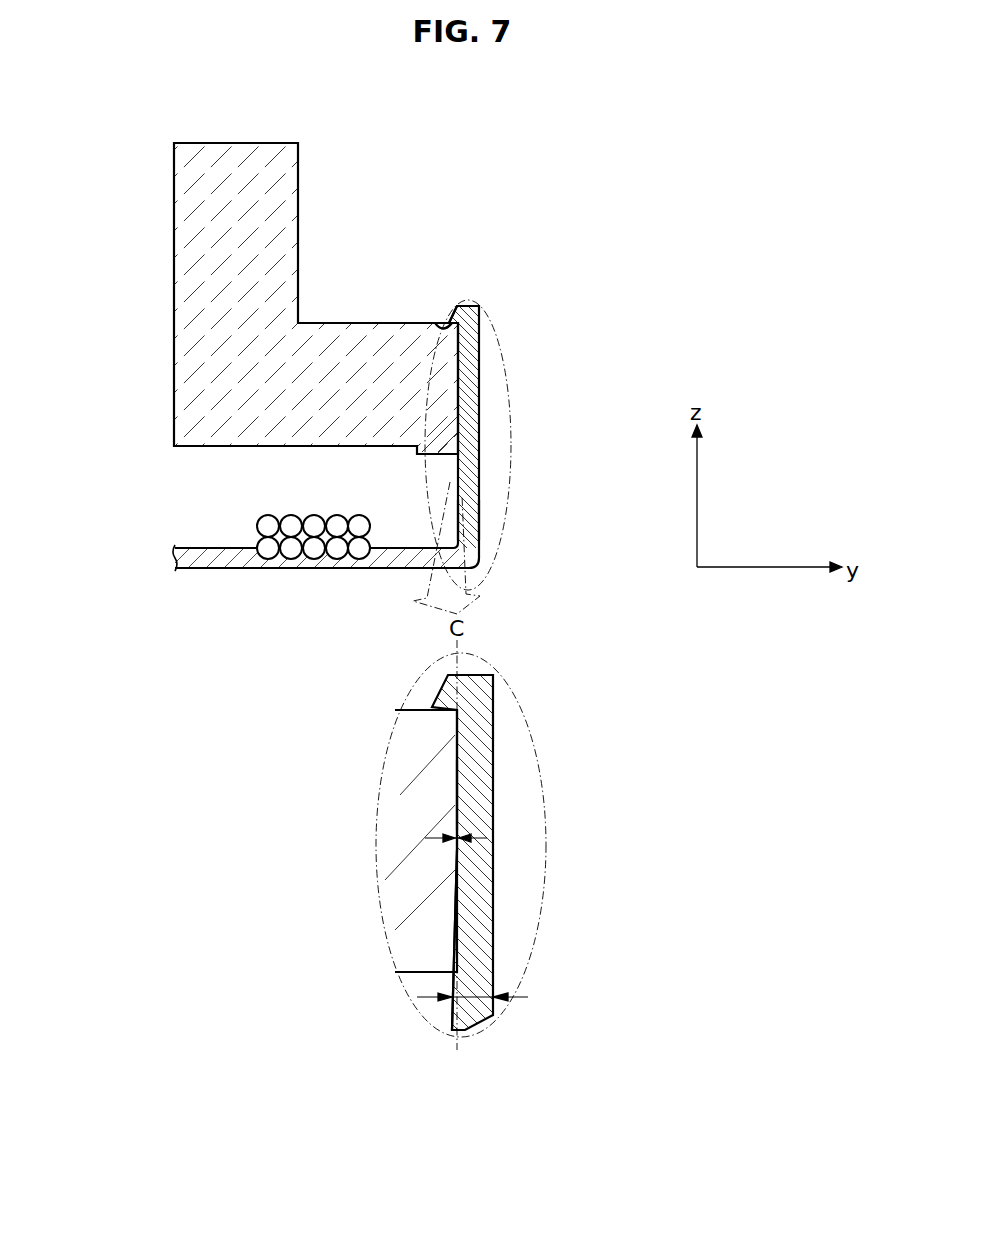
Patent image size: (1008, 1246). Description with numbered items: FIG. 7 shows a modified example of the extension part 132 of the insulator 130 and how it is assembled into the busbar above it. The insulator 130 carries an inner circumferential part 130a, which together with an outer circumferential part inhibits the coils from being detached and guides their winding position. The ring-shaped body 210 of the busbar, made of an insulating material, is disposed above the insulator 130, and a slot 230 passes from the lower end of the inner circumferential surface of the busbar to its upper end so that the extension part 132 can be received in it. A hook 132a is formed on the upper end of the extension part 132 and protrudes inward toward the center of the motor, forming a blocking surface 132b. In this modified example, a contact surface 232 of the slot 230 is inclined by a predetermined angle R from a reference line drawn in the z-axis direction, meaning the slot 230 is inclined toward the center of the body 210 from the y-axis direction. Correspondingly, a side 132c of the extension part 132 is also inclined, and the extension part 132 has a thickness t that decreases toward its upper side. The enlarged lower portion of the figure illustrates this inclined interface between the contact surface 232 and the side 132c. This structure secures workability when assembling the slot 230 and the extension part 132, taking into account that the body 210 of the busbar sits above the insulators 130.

The body 210 is at (178, 236).
The slot 230 is at (458, 405).
The contact surface 232 is at (457, 787).
The insulator 130 is at (299, 570).
The inner circumferential part 130a is at (480, 522).
The extension part 132 is at (480, 425).
The hook 132a is at (455, 306).
The blocking surface 132b is at (440, 330).
The side 132c is at (457, 817).
The predetermined angle R is at (455, 848).
The thickness t is at (466, 998).